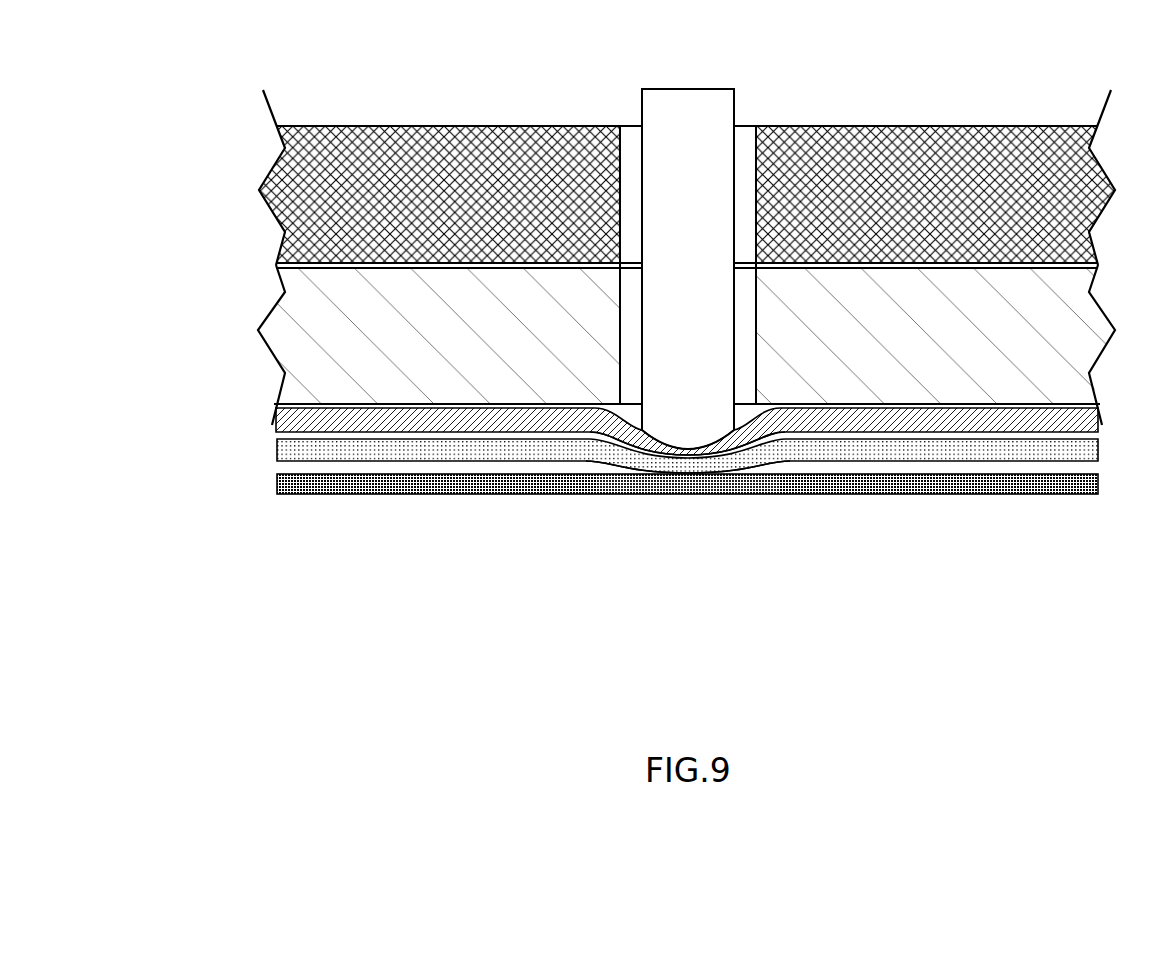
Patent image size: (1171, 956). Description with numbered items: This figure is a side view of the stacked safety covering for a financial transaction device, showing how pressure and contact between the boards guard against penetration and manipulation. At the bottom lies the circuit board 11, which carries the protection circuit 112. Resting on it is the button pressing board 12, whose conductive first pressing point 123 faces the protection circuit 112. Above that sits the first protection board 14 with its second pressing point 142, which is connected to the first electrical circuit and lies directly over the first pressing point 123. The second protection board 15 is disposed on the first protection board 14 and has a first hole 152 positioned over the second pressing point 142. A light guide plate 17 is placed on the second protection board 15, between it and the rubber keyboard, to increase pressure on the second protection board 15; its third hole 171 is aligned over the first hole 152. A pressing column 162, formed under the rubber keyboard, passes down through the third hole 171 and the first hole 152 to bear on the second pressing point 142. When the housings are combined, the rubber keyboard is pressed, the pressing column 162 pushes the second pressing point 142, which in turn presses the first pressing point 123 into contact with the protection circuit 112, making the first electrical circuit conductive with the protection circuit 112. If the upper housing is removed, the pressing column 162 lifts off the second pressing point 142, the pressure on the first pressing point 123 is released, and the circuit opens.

The circuit board 11 is at (280, 500).
The protection circuit 112 is at (712, 497).
The button pressing board 12 is at (278, 452).
The first pressing point 123 is at (596, 466).
The first protection board 14 is at (278, 417).
The second pressing point 142 is at (626, 452).
The second protection board 15 is at (281, 325).
The first hole 152 is at (627, 277).
The light guide plate 17 is at (443, 128).
The third hole 171 is at (632, 130).
The pressing column 162 is at (715, 103).